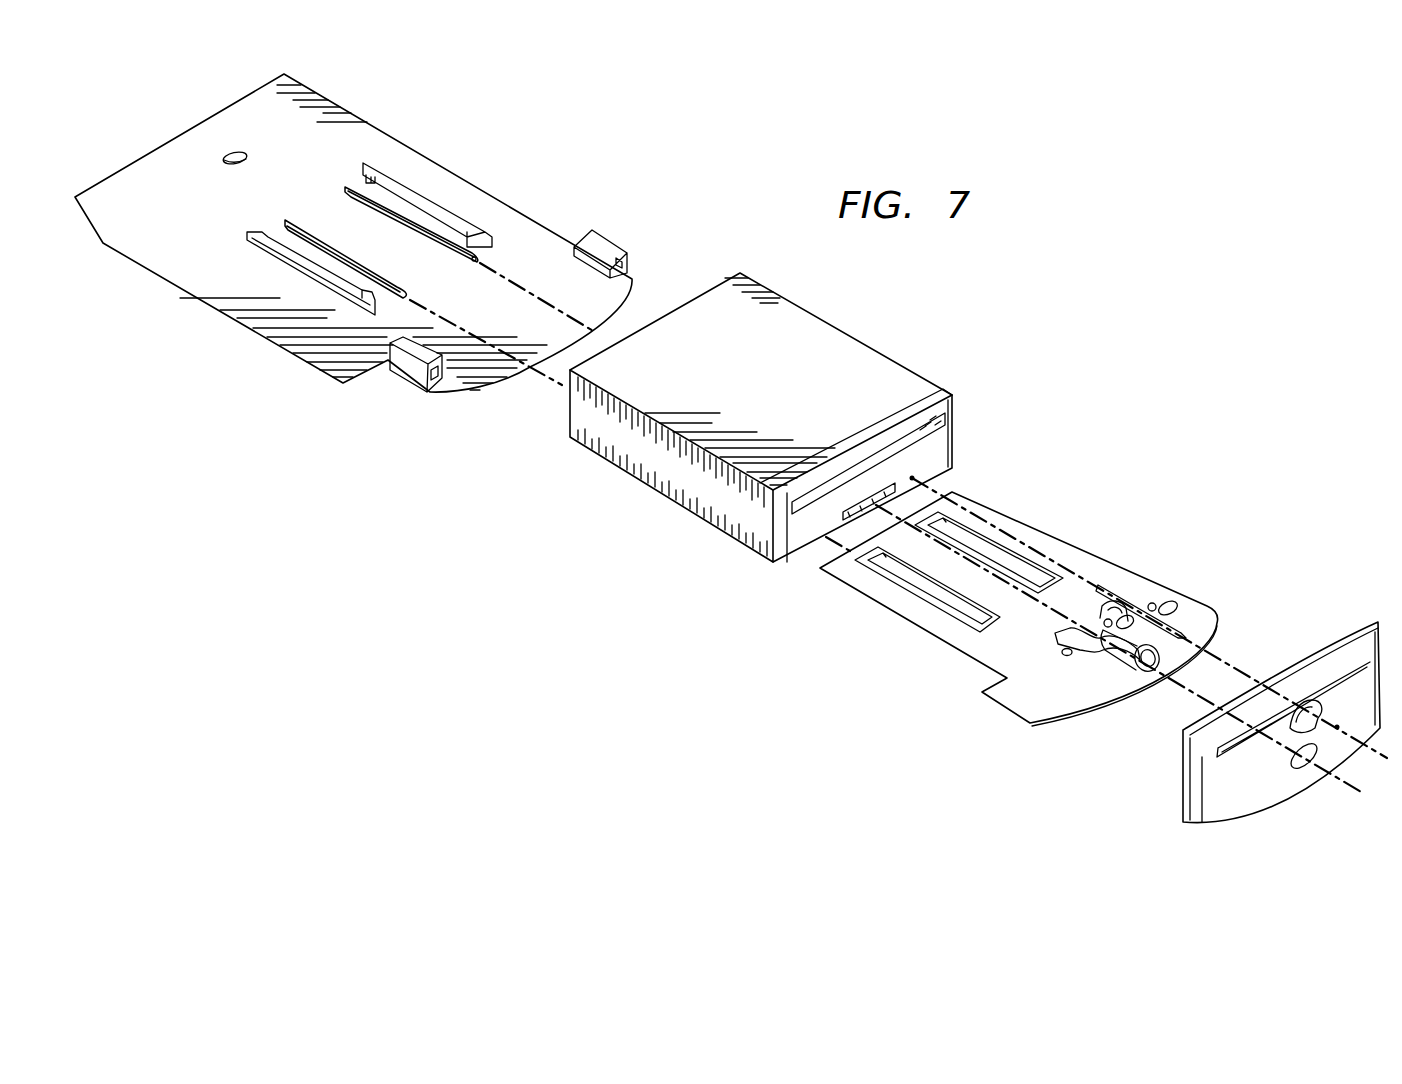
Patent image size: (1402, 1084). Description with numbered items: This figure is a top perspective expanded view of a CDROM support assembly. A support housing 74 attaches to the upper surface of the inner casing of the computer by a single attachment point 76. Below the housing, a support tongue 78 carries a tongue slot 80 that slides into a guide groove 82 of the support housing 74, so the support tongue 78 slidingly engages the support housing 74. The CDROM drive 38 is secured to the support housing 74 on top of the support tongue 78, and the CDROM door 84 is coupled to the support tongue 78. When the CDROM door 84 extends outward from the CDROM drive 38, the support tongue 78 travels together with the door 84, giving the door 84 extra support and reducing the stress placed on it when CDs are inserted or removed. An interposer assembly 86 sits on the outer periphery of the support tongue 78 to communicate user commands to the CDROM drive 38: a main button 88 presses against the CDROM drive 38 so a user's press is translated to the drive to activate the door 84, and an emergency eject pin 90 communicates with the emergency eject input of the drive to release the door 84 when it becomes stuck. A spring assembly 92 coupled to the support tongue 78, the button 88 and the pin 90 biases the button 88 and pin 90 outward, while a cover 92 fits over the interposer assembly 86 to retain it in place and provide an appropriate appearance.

The CDROM drive 38 is at (833, 326).
The support housing 74 is at (452, 173).
The attachment point 76 is at (223, 161).
The support tongue 78 is at (898, 615).
The tongue slot 80 is at (975, 548).
The guide groove 82 is at (298, 222).
The CDROM door 84 is at (948, 445).
The interposer assembly 86 is at (1126, 661).
The main button 88 is at (1060, 624).
The emergency eject pin 90 is at (1120, 593).
The cover 92 is at (1320, 661).